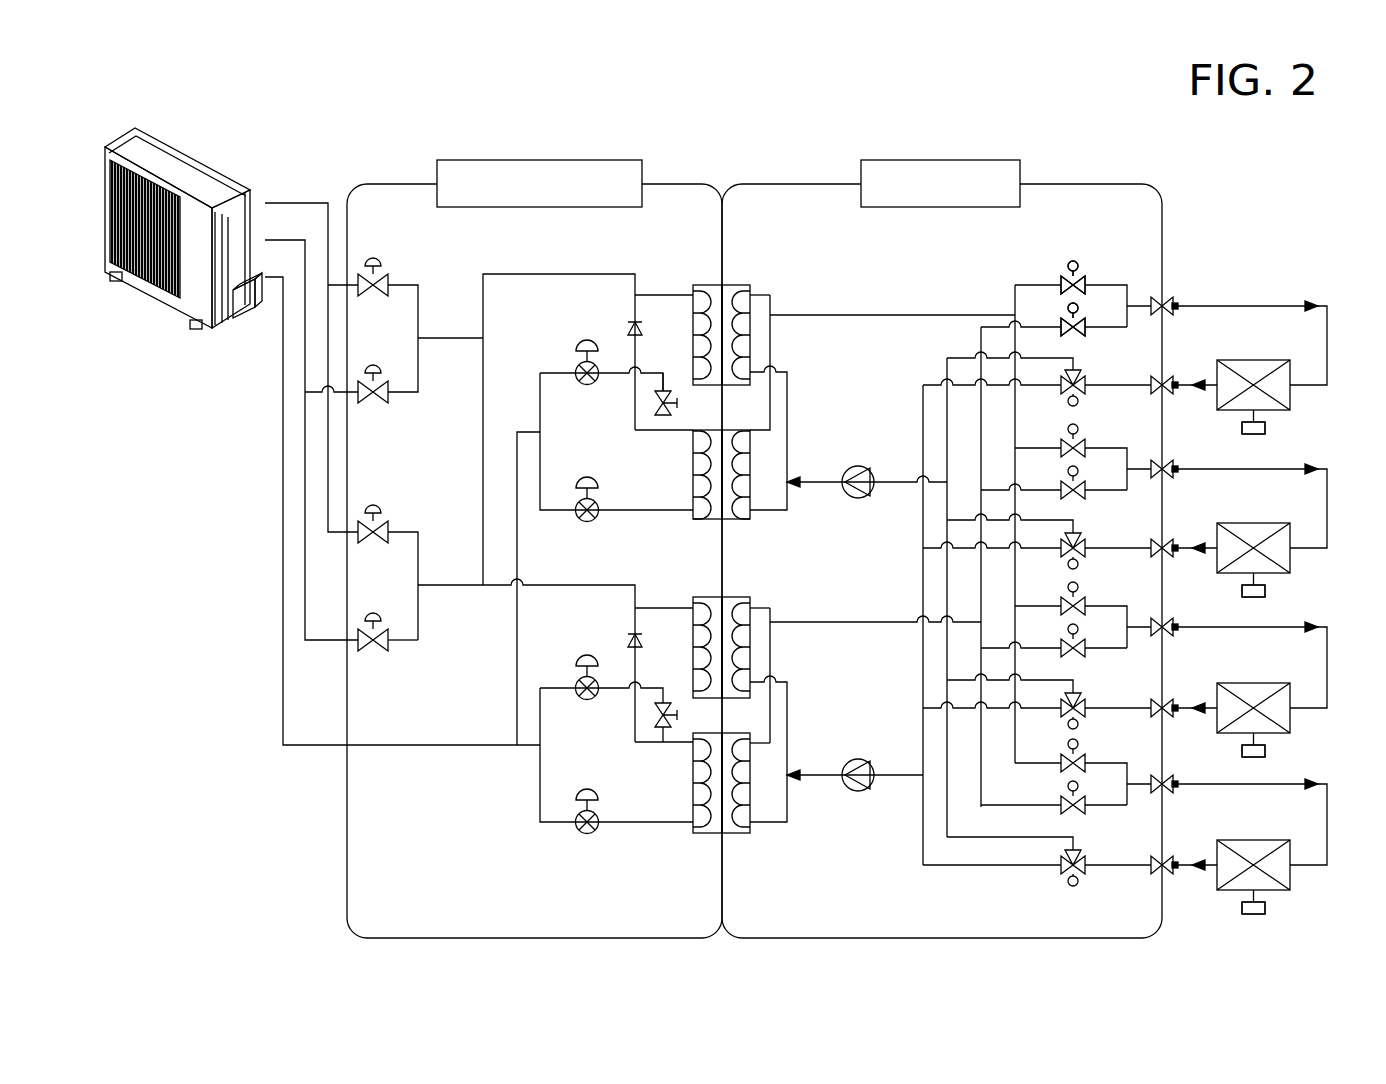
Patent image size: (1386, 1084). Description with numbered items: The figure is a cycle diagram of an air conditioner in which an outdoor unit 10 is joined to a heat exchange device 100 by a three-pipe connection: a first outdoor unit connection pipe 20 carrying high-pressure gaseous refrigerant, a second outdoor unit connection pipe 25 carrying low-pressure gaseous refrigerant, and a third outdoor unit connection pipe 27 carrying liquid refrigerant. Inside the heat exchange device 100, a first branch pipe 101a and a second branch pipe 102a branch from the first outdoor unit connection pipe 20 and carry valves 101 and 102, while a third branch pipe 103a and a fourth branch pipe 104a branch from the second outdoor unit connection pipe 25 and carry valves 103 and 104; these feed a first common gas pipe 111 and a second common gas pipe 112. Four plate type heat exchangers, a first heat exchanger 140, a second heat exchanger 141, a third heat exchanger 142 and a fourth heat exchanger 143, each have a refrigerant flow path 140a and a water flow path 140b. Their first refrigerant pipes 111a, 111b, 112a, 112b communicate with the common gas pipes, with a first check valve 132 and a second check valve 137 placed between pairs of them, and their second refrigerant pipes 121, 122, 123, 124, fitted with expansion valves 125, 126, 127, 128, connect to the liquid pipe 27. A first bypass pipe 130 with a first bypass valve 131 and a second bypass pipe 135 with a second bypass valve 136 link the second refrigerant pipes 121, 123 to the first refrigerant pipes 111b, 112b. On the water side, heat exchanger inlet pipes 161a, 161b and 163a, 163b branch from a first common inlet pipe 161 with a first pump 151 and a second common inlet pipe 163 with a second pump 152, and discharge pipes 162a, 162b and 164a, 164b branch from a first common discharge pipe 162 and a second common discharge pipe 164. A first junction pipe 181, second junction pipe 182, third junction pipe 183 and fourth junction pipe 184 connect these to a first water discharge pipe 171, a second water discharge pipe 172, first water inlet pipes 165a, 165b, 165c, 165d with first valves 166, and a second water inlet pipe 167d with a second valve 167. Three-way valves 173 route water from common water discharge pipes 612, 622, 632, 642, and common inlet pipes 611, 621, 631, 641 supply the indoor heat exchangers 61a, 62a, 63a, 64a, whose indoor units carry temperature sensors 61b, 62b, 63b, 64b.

The outdoor unit 10 is at (206, 132).
The first outdoor unit connection pipe 20 is at (274, 202).
The second outdoor unit connection pipe 25 is at (300, 238).
The third outdoor unit connection pipe 27 is at (282, 352).
The first heat exchange device 100 is at (668, 174).
The valve 101 is at (376, 262).
The first branch pipe 101a is at (405, 284).
The valve 102 is at (376, 508).
The second branch pipe 102a is at (404, 532).
The valve 103 is at (376, 368).
The third branch pipe 103a is at (404, 397).
The valve 104 is at (376, 615).
The fourth branch pipe 104a is at (402, 645).
The first common gas pipe 111 is at (450, 336).
The first refrigerant pipe 111a is at (668, 292).
The first refrigerant pipe 111b is at (650, 434).
The second common gas pipe 112 is at (452, 588).
The first refrigerant pipe 112a is at (672, 604).
The first refrigerant pipe 112b is at (672, 748).
The second refrigerant pipe 121 is at (612, 378).
The second refrigerant pipe 122 is at (612, 514).
The second refrigerant pipe 123 is at (616, 686).
The second refrigerant pipe 124 is at (646, 826).
The first expansion valve 125 is at (580, 345).
The second expansion valve 126 is at (582, 484).
The third expansion valve 127 is at (580, 675).
The fourth expansion valve 128 is at (588, 835).
The first bypass pipe 130 is at (658, 390).
The first bypass valve 131 is at (648, 410).
The first check valve 132 is at (628, 326).
The second bypass pipe 135 is at (652, 700).
The second bypass valve 136 is at (654, 736).
The second check valve 137 is at (644, 641).
The first heat exchanger 140 is at (737, 288).
The refrigerant flow path 140a is at (705, 288).
The water flow path 140b is at (730, 288).
The second heat exchanger 141 is at (740, 522).
The third heat exchanger 142 is at (760, 598).
The fourth heat exchanger 143 is at (740, 836).
The first pump 151 is at (856, 465).
The second pump 152 is at (858, 793).
The first common inlet pipe 161 is at (816, 487).
The first heat exchanger inlet pipe 161a is at (786, 372).
The second heat exchanger inlet pipe 161b is at (756, 514).
The first common discharge pipe 162 is at (820, 313).
The first heat exchanger discharge pipe 162a is at (766, 292).
The second heat exchanger discharge pipe 162b is at (772, 334).
The second common inlet pipe 163 is at (818, 780).
The third heat exchanger inlet pipe 163a is at (790, 686).
The fourth heat exchanger inlet pipe 163b is at (780, 830).
The second common discharge pipe 164 is at (808, 626).
The third heat exchanger discharge pipe 164a is at (770, 608).
The fourth heat exchanger discharge pipe 164b is at (772, 745).
The first water inlet pipe 165a is at (1040, 284).
The first water inlet pipe 165b is at (1036, 446).
The first water inlet pipe 165c is at (1086, 604).
The first water inlet pipe 165d is at (1085, 764).
The first valve 166 is at (1082, 272).
The second valve 167 is at (1080, 312).
The second water inlet pipe 167d is at (1105, 330).
The first water discharge pipe 171 is at (958, 356).
The second water discharge pipe 172 is at (925, 400).
The three-way valve 173 is at (1086, 872).
The first junction pipe 181 is at (946, 736).
The second junction pipe 182 is at (921, 860).
The third junction pipe 183 is at (1013, 318).
The fourth junction pipe 184 is at (980, 410).
The common inlet pipe 611 is at (1250, 304).
The common water discharge pipe 612 is at (1195, 392).
The indoor heat exchanger 61a is at (1291, 402).
The temperature sensor 61b is at (1263, 432).
The common inlet pipe 621 is at (1328, 512).
The common water discharge pipe 622 is at (1195, 555).
The indoor heat exchanger 62a is at (1291, 562).
The temperature sensor 62b is at (1262, 596).
The common inlet pipe 631 is at (1326, 662).
The common water discharge pipe 632 is at (1200, 700).
The indoor heat exchanger 63a is at (1291, 722).
The temperature sensor 63b is at (1264, 756).
The common inlet pipe 641 is at (1326, 822).
The common water discharge pipe 642 is at (1190, 872).
The indoor heat exchanger 64a is at (1291, 880).
The temperature sensor 64b is at (1264, 913).